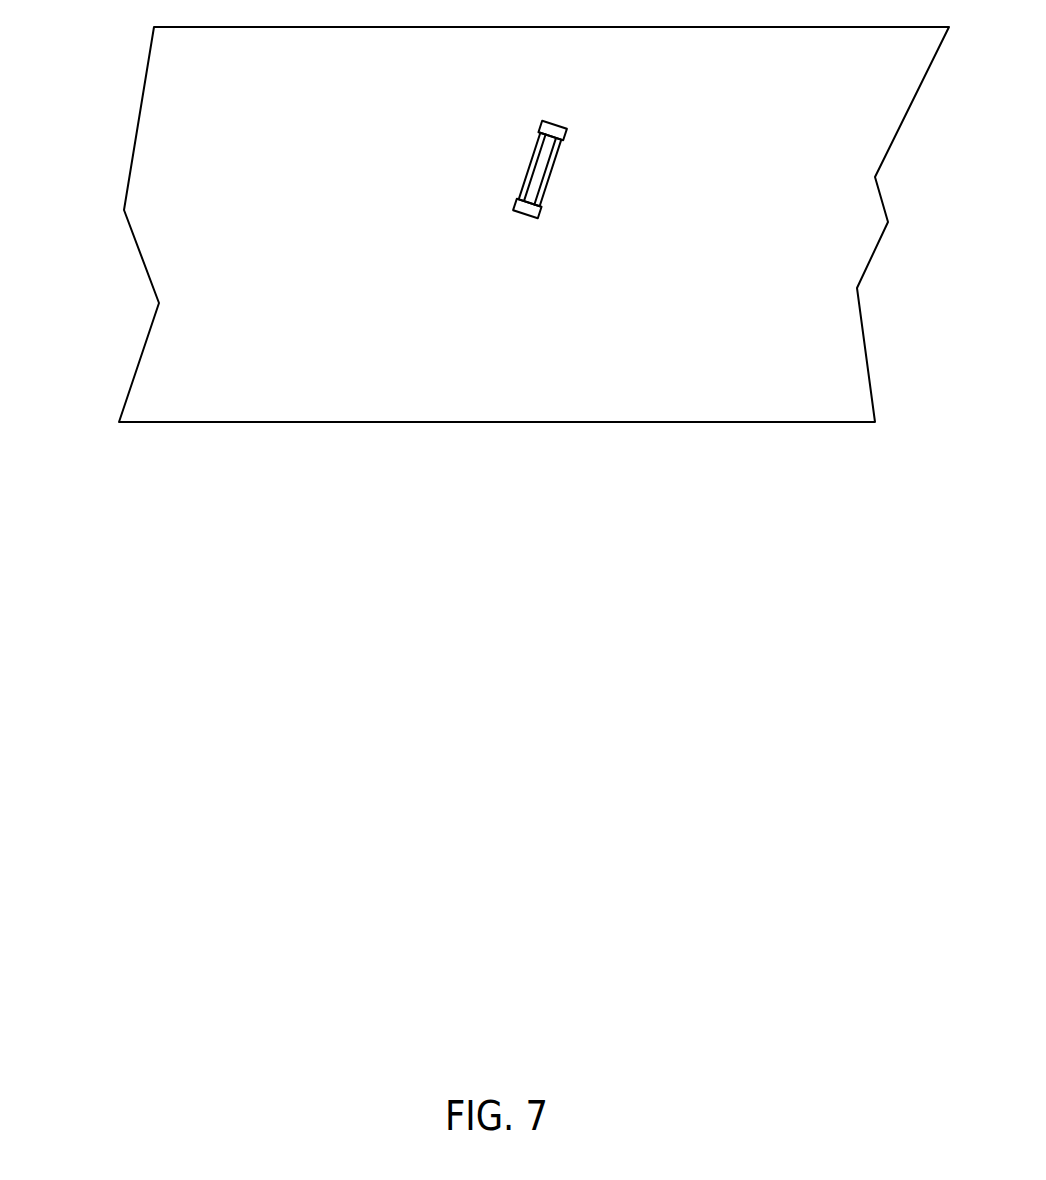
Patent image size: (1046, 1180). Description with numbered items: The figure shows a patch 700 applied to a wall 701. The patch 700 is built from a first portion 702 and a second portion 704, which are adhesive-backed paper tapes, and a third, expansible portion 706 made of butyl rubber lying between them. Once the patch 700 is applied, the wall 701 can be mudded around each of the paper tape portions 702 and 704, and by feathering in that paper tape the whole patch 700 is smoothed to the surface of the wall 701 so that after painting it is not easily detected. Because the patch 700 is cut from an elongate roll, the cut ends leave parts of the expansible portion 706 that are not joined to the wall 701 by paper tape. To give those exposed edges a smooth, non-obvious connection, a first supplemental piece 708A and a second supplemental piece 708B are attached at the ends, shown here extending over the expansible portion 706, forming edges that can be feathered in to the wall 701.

The patch 700 is at (540, 281).
The wall 701 is at (167, 92).
The first portion 702 is at (529, 158).
The second portion 704 is at (550, 176).
The expansible portion 706 is at (546, 193).
The first supplemental piece 708A is at (553, 123).
The second supplemental piece 708B is at (517, 214).